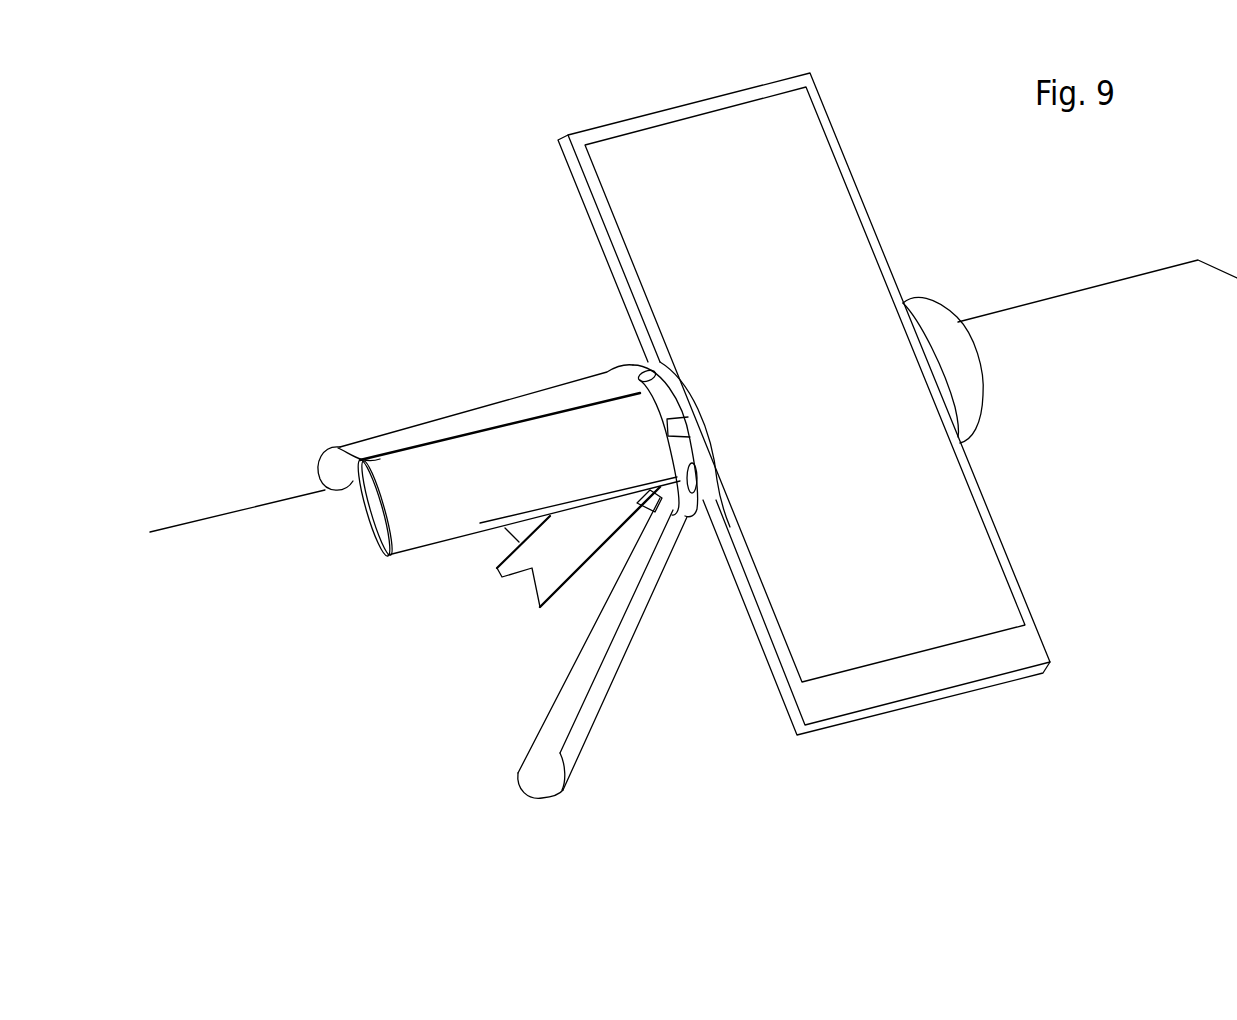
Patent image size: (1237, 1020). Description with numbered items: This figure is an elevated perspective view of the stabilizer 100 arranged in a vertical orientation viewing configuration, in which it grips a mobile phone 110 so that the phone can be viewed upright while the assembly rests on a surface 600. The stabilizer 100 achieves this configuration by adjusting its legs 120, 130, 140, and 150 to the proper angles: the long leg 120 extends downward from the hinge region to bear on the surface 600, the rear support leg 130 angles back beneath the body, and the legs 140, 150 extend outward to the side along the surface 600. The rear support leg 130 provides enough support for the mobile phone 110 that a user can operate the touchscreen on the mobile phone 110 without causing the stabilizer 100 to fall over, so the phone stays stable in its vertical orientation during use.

The stabilizer 100 is at (1000, 243).
The mobile phone 110 is at (620, 198).
The leg 120 is at (576, 737).
The rear support leg 130 is at (548, 577).
The leg 140 is at (387, 447).
The leg 150 is at (522, 462).
The surface 600 is at (1113, 487).